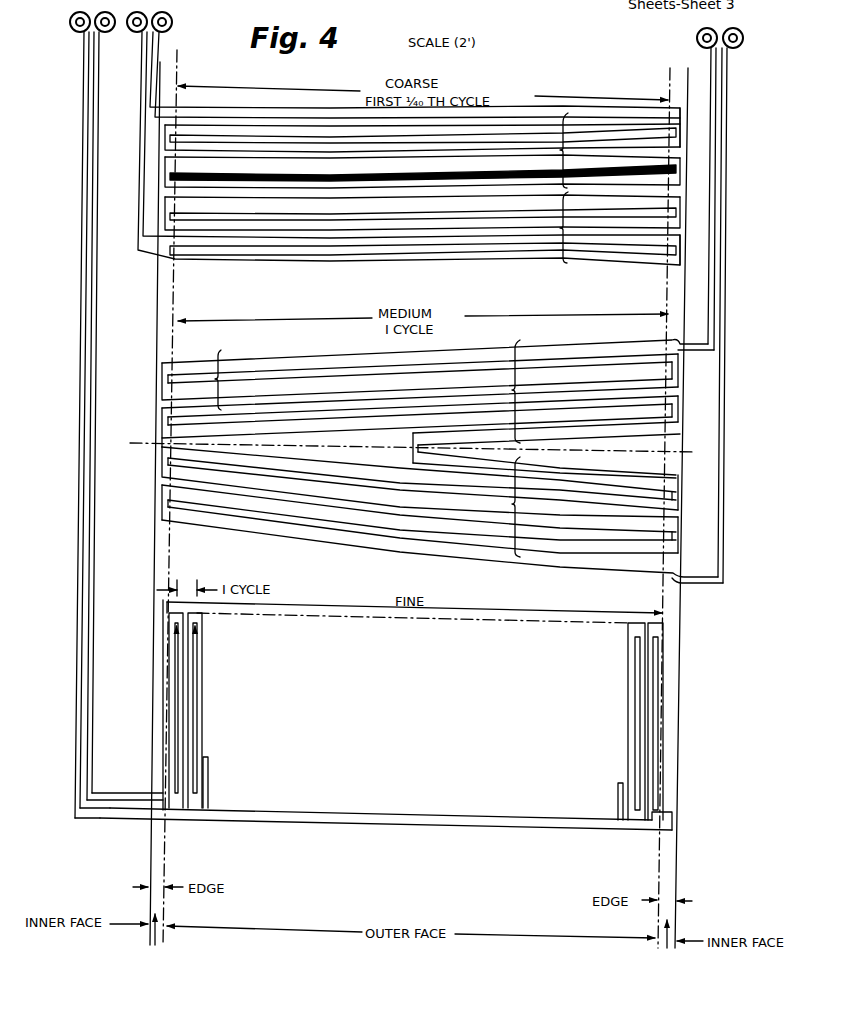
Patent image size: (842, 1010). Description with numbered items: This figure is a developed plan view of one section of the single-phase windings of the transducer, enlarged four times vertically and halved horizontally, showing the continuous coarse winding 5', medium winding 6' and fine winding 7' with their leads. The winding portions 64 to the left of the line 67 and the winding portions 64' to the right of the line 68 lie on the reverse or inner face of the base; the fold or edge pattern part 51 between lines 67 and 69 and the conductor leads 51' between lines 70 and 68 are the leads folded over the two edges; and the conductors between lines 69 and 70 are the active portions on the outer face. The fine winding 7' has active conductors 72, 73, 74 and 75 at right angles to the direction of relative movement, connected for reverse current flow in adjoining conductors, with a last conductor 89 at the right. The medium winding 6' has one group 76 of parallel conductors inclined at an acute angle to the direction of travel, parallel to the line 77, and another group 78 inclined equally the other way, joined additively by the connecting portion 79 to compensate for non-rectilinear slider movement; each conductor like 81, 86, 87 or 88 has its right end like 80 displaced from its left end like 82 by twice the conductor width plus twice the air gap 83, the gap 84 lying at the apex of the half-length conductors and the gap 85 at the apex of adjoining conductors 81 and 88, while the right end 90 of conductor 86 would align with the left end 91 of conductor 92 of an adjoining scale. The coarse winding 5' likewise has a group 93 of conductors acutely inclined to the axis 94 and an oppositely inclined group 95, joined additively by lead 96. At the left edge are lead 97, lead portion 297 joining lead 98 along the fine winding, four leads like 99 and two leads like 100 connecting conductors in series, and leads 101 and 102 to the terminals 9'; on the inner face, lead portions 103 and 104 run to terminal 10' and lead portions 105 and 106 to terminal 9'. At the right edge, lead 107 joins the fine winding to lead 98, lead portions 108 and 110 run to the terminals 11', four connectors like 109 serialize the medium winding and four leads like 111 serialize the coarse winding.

The terminal 10' is at (78, 20).
The terminal 9' is at (162, 20).
The terminal 11' is at (736, 38).
The coarse winding 5' is at (423, 183).
The medium winding 6' is at (412, 383).
The fine winding 7' is at (409, 601).
The fold or edge pattern part 51 is at (236, 930).
The conductor leads 51' is at (579, 938).
The winding portions 64 is at (64, 425).
The winding portions 64' is at (745, 315).
The line 67 is at (150, 858).
The line 68 is at (677, 860).
The line 69 is at (164, 850).
The line 70 is at (657, 858).
The active conductor 72 is at (169, 702).
The active conductor 73 is at (176, 668).
The active conductor 74 is at (192, 662).
The active conductor 75 is at (198, 695).
The group of parallel conductors 76 is at (515, 362).
The line 77 is at (652, 450).
The group of parallel conductors 78 is at (518, 555).
The connecting portion 79 is at (413, 437).
The right end of conductor 80 is at (677, 513).
The conductor 81 is at (330, 474).
The left end of conductor 82 is at (163, 450).
The air gap 83 is at (607, 513).
The gap 84 is at (413, 450).
The gap 85 is at (168, 439).
The conductor 86 is at (582, 428).
The conductor 87 is at (552, 476).
The conductor 88 is at (330, 426).
The last conductor 89 is at (657, 688).
The right end of conductor 90 is at (676, 430).
The left end of conductor 91 is at (162, 410).
The conductor 92 is at (217, 376).
The group of parallel conductors 93 is at (563, 116).
The axis 94 is at (681, 190).
The group of parallel conductors 95 is at (565, 260).
The lead 96 is at (168, 176).
The lead 97 is at (156, 793).
The lead 98 is at (322, 828).
The lead 99 is at (165, 505).
The lead 100 is at (168, 135).
The lead 101 is at (180, 106).
The lead 102 is at (172, 255).
The lead portion 103 is at (98, 818).
The lead portion 104 is at (104, 793).
The lead portion 105 is at (140, 252).
The lead portion 106 is at (150, 107).
The lead 107 is at (672, 818).
The lead portion 108 is at (675, 576).
The connector 109 is at (677, 478).
The lead portion 110 is at (670, 340).
The lead 111 is at (675, 264).
The lead portion 297 is at (157, 818).